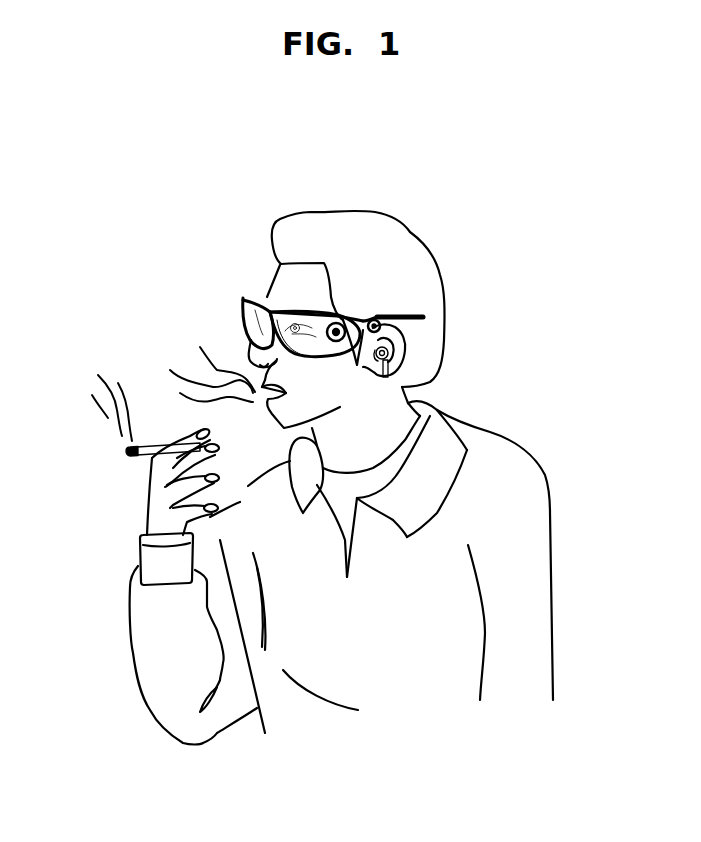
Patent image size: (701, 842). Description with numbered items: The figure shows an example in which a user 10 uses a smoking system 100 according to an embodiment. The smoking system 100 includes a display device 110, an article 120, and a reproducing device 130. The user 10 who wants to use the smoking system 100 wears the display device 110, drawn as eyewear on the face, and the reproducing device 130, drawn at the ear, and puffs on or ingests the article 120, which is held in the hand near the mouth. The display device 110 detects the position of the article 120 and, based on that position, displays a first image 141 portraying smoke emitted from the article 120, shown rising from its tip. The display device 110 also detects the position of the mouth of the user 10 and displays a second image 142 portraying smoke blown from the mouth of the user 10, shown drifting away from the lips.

The user 10 is at (410, 231).
The smoking system 100 is at (127, 280).
The display device 110 is at (243, 297).
The article 120 is at (143, 465).
The reproducing device 130 is at (394, 354).
The first image 141 is at (112, 418).
The second image 142 is at (214, 368).